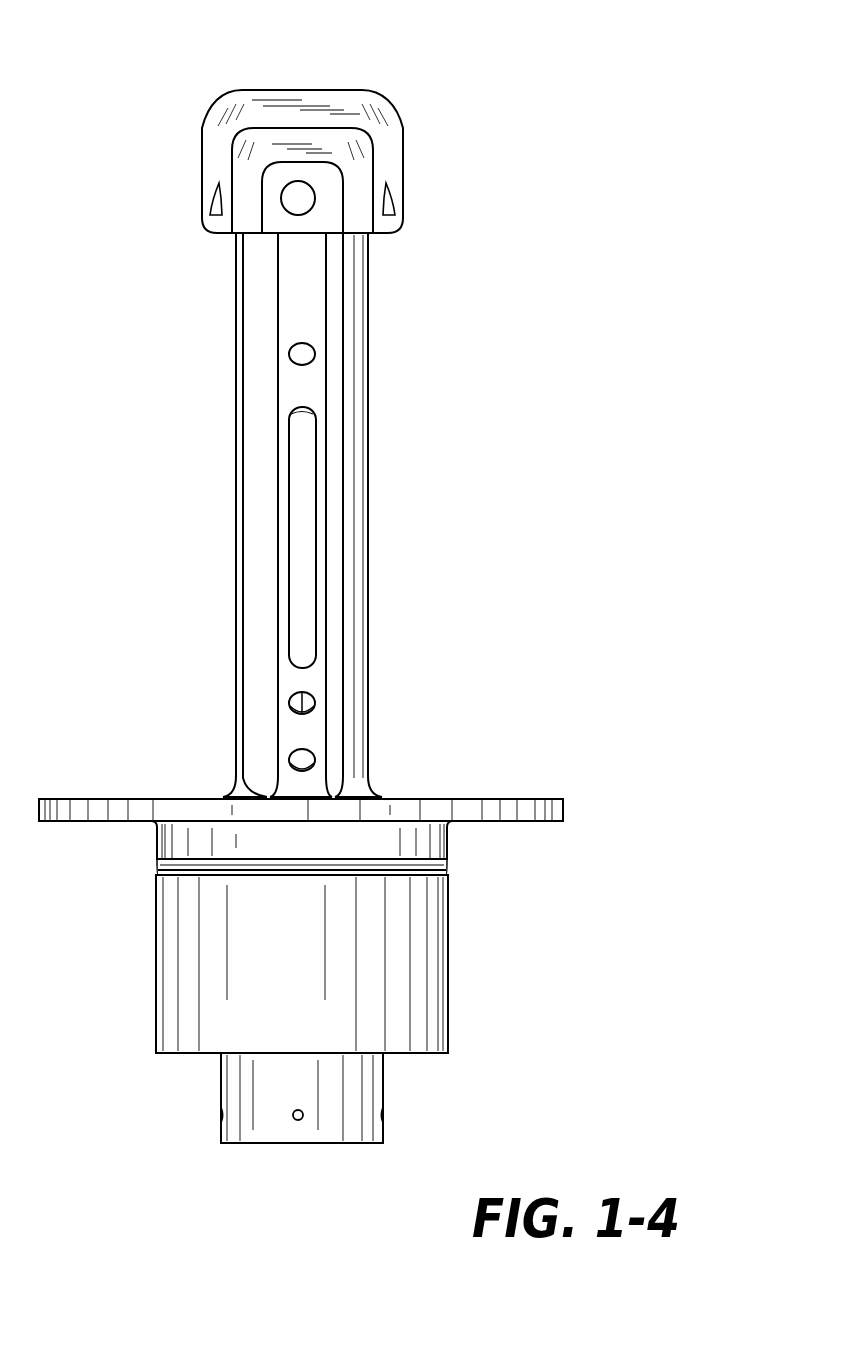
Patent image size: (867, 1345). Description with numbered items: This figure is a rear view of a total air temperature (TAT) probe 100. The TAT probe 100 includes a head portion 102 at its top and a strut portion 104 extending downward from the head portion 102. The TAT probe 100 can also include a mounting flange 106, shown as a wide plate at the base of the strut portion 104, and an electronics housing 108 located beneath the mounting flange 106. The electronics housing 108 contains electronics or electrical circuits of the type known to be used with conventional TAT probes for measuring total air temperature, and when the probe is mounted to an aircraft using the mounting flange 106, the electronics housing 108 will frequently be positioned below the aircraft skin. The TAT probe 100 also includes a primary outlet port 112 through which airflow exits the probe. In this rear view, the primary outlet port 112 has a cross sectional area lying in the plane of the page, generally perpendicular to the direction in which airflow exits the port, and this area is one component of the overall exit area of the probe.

The TAT probe 100 is at (532, 125).
The head portion 102 is at (313, 98).
The strut portion 104 is at (368, 295).
The mounting flange 106 is at (518, 807).
The electronics housing 108 is at (420, 957).
The primary outlet port 112 is at (315, 192).